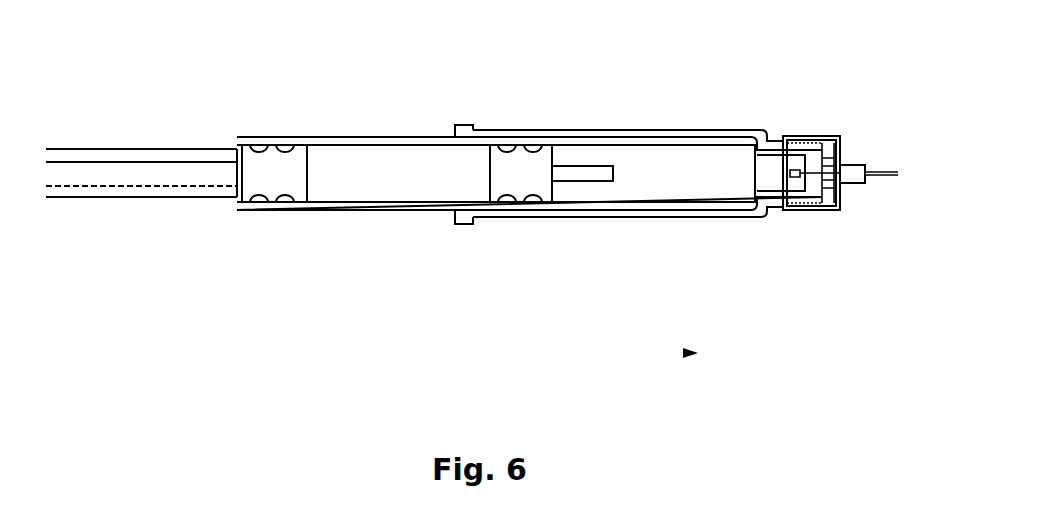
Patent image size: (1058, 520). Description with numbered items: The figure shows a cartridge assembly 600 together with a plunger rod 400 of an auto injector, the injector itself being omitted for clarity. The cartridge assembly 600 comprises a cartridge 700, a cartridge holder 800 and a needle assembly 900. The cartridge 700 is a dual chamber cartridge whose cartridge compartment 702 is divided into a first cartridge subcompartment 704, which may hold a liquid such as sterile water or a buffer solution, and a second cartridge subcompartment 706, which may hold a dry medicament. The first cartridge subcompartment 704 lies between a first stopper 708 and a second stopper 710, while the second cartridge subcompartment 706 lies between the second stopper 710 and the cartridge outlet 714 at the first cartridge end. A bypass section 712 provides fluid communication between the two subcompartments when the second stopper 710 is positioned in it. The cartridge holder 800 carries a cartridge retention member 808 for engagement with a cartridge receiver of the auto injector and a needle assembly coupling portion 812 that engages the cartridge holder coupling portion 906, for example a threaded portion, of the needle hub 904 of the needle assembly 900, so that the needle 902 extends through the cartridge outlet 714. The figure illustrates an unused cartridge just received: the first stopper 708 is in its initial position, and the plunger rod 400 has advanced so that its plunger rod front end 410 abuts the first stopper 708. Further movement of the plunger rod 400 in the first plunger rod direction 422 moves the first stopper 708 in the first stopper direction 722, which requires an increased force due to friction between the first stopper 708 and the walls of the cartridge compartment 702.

The plunger rod 400 is at (167, 149).
The plunger rod front end 410 is at (237, 214).
The cartridge assembly 600 is at (727, 62).
The cartridge 700 is at (390, 137).
The cartridge compartment 702 is at (670, 155).
The first cartridge subcompartment 704 is at (398, 157).
The second cartridge subcompartment 706 is at (617, 158).
The first stopper 708 is at (278, 158).
The second stopper 710 is at (507, 180).
The bypass section 712 is at (590, 167).
The cartridge outlet 714 is at (818, 150).
The first stopper direction 722 is at (285, 353).
The first plunger rod direction 422 is at (684, 353).
The cartridge holder 800 is at (678, 213).
The cartridge retention member 808 is at (462, 222).
The needle assembly coupling portion 812 is at (777, 210).
The needle assembly 900 is at (873, 138).
The needle 902 is at (888, 168).
The needle hub 904 is at (850, 186).
The cartridge holder coupling portion 906 is at (808, 208).